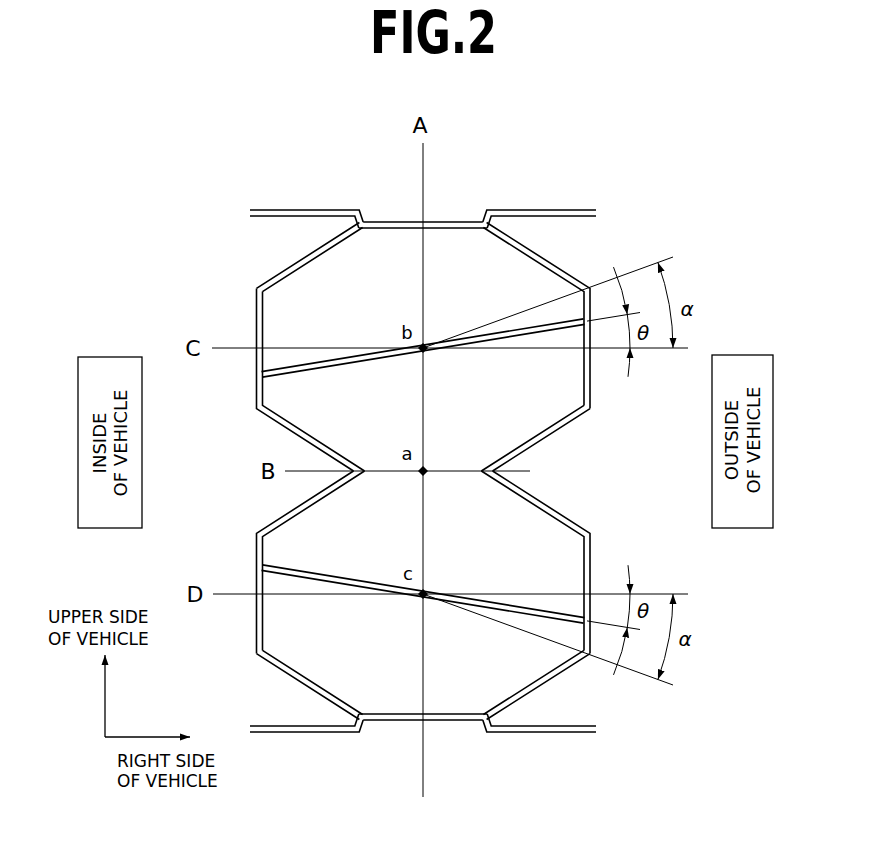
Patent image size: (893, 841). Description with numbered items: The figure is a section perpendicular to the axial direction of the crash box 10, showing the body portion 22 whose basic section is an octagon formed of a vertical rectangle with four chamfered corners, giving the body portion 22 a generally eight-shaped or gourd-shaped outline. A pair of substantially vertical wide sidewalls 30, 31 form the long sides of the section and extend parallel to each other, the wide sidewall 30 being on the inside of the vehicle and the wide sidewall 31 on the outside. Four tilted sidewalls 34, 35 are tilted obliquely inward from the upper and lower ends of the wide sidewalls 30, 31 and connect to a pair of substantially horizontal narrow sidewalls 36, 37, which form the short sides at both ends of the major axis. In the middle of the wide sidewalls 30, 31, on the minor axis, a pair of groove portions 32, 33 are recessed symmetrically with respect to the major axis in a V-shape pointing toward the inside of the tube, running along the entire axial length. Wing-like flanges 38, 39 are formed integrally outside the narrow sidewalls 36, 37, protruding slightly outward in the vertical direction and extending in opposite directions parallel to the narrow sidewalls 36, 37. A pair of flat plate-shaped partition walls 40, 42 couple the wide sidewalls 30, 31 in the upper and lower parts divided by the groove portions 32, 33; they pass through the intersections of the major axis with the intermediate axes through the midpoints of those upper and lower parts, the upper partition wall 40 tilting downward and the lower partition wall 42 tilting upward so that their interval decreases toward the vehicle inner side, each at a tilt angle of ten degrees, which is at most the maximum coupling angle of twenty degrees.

The bumper reinforcement 10 is at (504, 140).
The body portion 22 is at (342, 171).
The wide sidewall 30 is at (257, 333).
The wide sidewall 31 is at (592, 558).
The groove portion 32 is at (290, 520).
The groove portion 33 is at (556, 430).
The tilted sidewall 34 is at (288, 268).
The tilted sidewall 35 is at (552, 262).
The narrow sidewall 36 is at (400, 221).
The narrow sidewall 37 is at (447, 722).
The wing-like flange 38 is at (290, 210).
The wing-like flange 39 is at (323, 735).
The partition wall 40 is at (329, 361).
The partition wall 42 is at (333, 580).